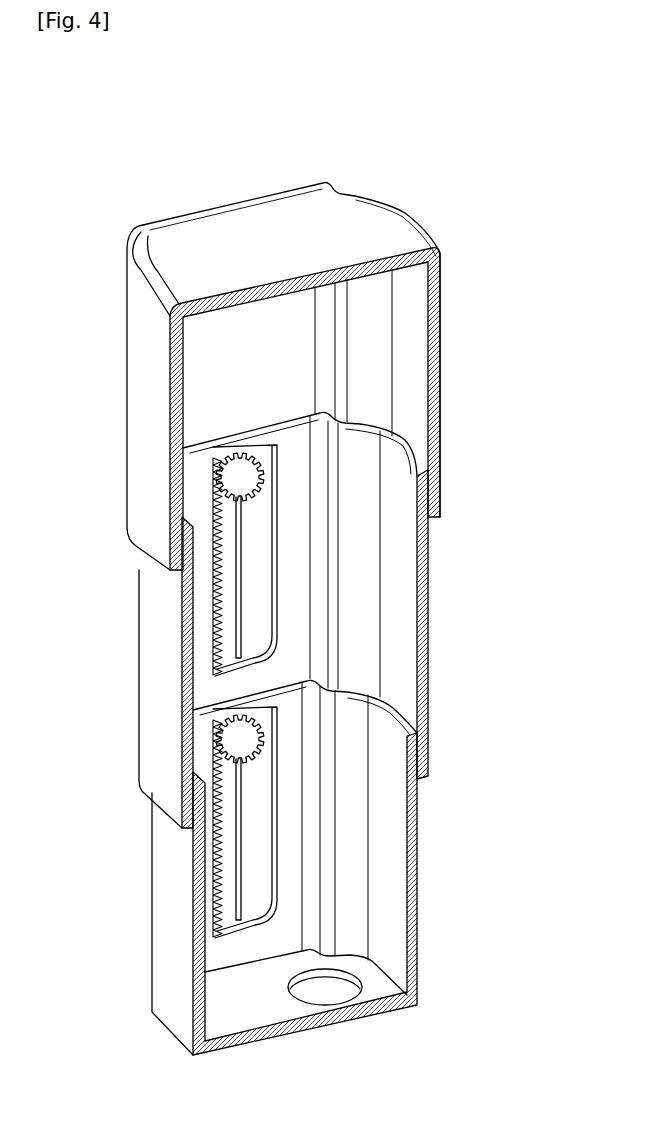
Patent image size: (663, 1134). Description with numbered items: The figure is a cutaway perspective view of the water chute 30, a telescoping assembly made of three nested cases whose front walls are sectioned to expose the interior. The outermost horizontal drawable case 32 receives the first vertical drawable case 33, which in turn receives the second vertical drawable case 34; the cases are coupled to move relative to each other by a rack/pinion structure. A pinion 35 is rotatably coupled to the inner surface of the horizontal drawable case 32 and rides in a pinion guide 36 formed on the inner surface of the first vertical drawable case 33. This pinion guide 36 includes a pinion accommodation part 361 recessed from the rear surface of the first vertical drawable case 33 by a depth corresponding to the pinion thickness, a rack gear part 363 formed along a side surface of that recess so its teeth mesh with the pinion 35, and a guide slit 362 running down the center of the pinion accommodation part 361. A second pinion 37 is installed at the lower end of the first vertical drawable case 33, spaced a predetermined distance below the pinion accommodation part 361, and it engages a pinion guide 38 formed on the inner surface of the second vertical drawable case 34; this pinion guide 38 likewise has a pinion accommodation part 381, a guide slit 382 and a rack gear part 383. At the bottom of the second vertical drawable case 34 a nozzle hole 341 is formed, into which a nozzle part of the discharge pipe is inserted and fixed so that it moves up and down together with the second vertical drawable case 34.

The water chute 30 is at (321, 147).
The horizontal drawable case 32 is at (142, 418).
The first vertical drawable case 33 is at (158, 675).
The second vertical drawable case 34 is at (170, 917).
The nozzle hole 341 is at (302, 1002).
The pinion 35 is at (240, 477).
The pinion guide 36 is at (518, 522).
The pinion accommodation part 361 is at (277, 595).
The guide slit 362 is at (238, 570).
The rack gear part 363 is at (222, 543).
The pinion 37 is at (240, 739).
The pinion guide 38 is at (518, 784).
The pinion accommodation part 381 is at (277, 857).
The guide slit 382 is at (238, 832).
The rack gear part 383 is at (222, 805).